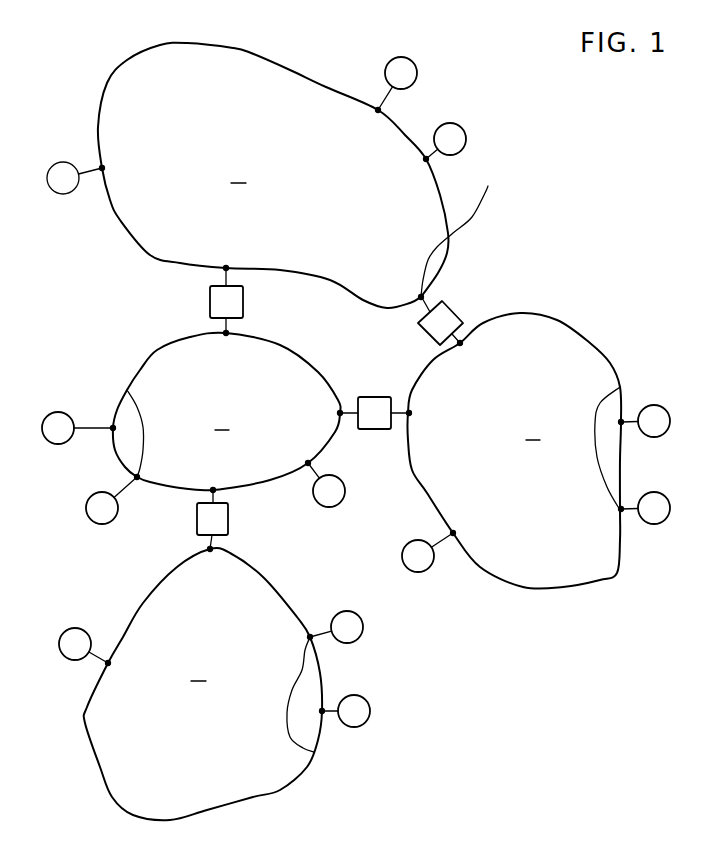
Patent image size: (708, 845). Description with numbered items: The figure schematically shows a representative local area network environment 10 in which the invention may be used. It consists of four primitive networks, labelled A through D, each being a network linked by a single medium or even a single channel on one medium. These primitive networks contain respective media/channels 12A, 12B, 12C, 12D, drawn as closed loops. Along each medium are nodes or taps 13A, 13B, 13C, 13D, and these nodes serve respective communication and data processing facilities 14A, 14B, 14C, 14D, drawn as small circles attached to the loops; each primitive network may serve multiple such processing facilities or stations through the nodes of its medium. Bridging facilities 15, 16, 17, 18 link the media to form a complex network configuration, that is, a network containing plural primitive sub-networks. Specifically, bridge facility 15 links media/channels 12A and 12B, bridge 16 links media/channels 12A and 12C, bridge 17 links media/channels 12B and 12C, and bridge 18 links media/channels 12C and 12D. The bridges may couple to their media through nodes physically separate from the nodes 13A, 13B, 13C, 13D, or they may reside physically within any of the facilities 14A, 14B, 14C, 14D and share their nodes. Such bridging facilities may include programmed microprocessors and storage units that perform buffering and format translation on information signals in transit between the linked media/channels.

The communication network 10 is at (545, 239).
The medium/channel 12A is at (253, 50).
The medium/channel 12B is at (553, 590).
The medium/channel 12C is at (166, 487).
The medium/channel 12D is at (100, 763).
The nodes or taps 13A is at (433, 160).
The nodes or taps 13B is at (628, 412).
The nodes or taps 13C is at (113, 428).
The nodes or taps 13D is at (332, 718).
The communication and data processing facilities 14A is at (411, 86).
The communication and data processing facilities 14B is at (662, 435).
The communication and data processing facilities 14C is at (99, 495).
The communication and data processing facilities 14D is at (350, 643).
The bridge facility 15 is at (448, 317).
The bridge 16 is at (210, 300).
The bridge 17 is at (373, 405).
The bridge 18 is at (228, 515).